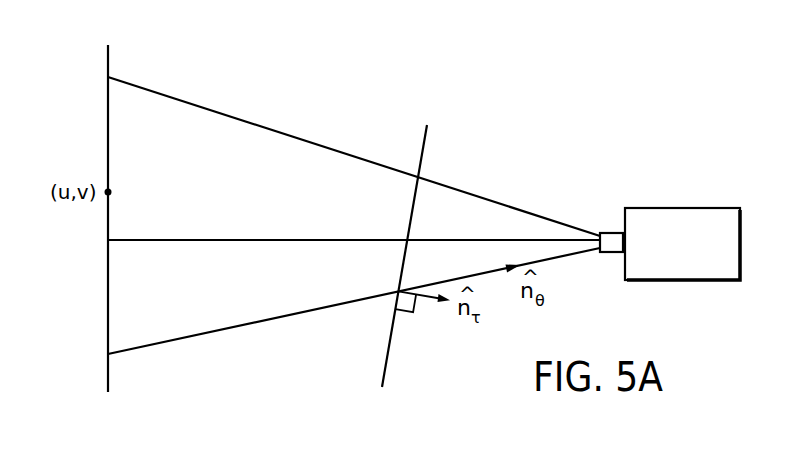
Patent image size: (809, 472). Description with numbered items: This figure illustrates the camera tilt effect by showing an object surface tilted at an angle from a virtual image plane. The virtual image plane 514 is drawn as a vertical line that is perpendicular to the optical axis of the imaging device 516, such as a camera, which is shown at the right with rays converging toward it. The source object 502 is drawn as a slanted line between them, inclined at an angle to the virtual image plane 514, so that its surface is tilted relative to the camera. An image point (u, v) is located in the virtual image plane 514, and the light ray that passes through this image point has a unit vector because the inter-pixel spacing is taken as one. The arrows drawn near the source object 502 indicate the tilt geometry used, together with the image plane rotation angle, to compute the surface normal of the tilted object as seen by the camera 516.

The virtual image plane 514 is at (109, 54).
The source object 502 is at (428, 138).
The imaging device 516 is at (712, 207).